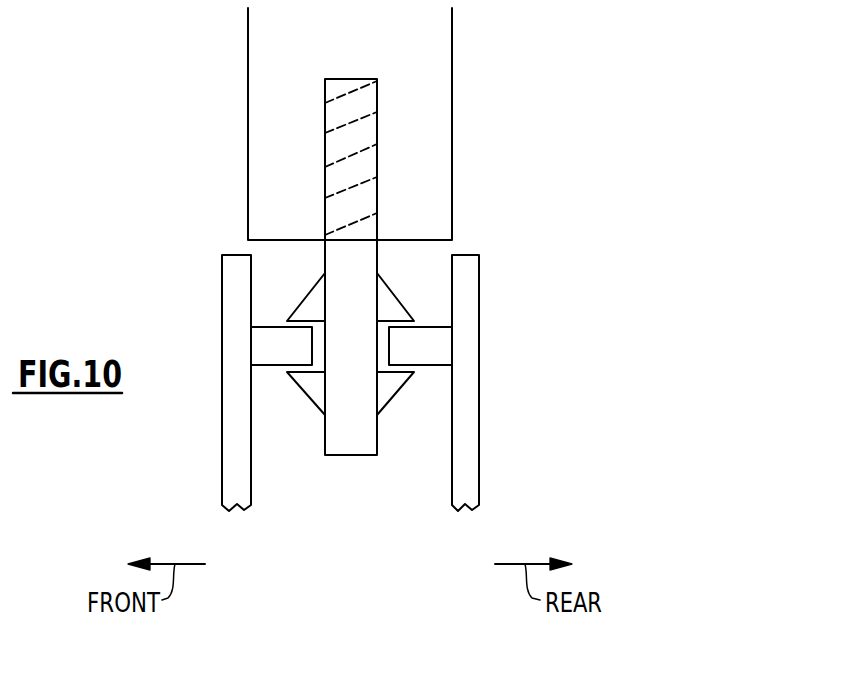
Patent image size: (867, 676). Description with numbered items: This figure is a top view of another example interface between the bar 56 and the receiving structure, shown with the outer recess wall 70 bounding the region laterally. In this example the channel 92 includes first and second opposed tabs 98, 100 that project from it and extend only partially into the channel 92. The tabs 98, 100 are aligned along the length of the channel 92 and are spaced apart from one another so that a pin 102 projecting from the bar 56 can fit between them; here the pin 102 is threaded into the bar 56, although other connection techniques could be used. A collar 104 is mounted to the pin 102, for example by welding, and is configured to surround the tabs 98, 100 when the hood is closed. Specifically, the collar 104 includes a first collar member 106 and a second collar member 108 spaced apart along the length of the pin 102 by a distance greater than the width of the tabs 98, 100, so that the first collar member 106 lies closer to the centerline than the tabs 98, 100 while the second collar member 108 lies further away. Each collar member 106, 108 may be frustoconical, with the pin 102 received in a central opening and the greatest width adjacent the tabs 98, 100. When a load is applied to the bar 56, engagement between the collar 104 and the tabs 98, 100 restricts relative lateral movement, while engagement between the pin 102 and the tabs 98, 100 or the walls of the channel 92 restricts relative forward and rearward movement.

The bar 56 is at (418, 158).
The outer recess wall 70 is at (234, 255).
The channel 92 is at (292, 480).
The first tab 98 is at (272, 343).
The second tab 100 is at (434, 350).
The pin 102 is at (355, 283).
The collar 104 is at (308, 419).
The first collar member 106 is at (388, 308).
The second collar member 108 is at (388, 384).